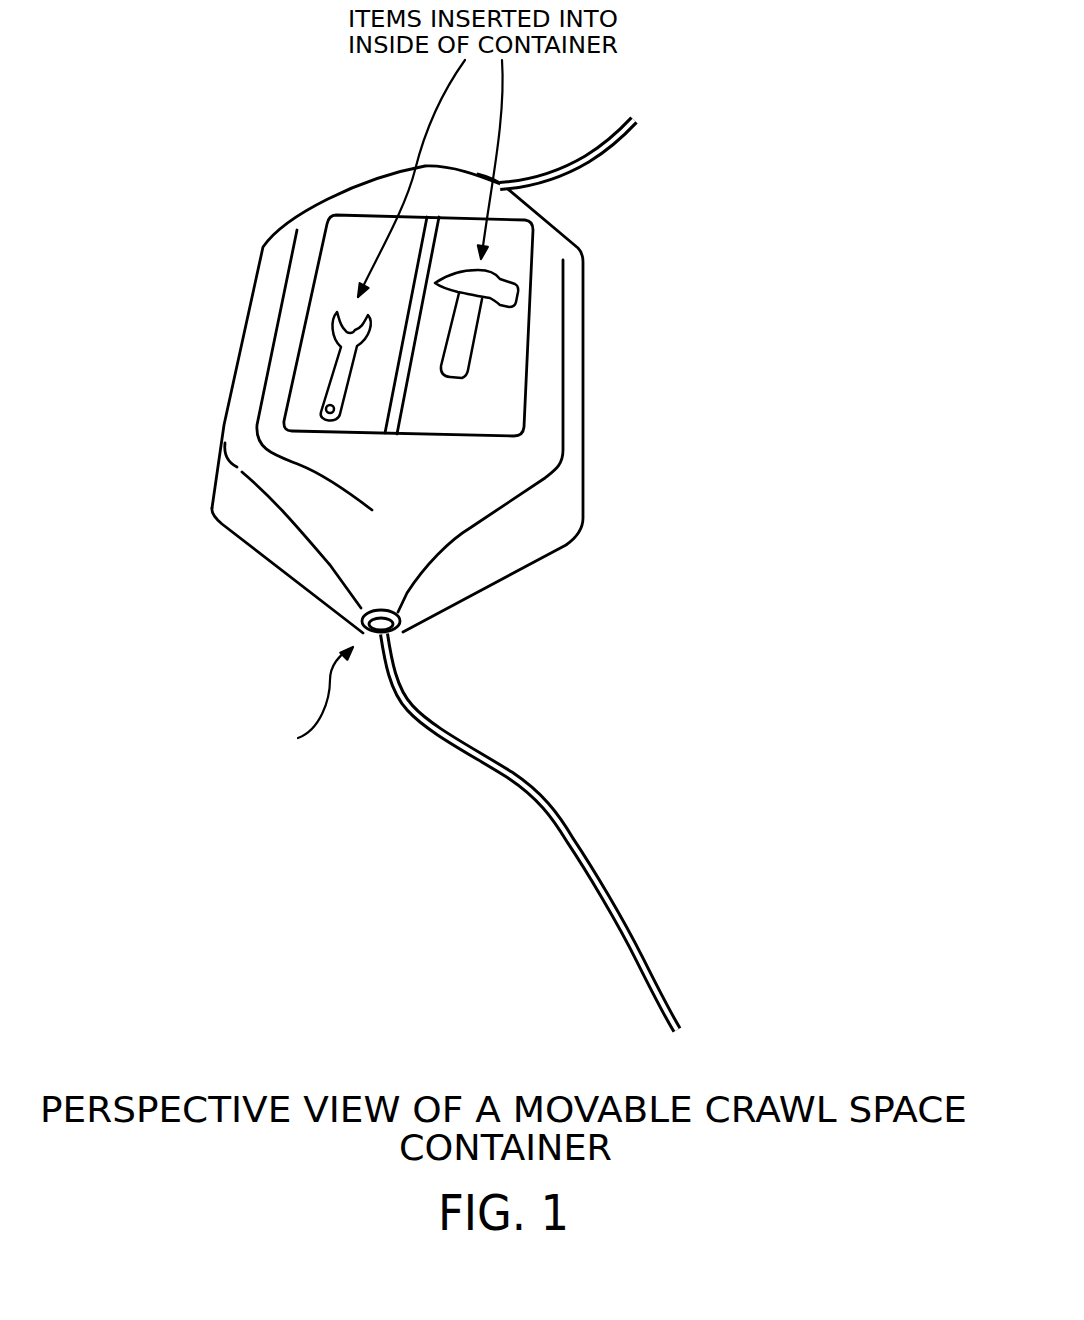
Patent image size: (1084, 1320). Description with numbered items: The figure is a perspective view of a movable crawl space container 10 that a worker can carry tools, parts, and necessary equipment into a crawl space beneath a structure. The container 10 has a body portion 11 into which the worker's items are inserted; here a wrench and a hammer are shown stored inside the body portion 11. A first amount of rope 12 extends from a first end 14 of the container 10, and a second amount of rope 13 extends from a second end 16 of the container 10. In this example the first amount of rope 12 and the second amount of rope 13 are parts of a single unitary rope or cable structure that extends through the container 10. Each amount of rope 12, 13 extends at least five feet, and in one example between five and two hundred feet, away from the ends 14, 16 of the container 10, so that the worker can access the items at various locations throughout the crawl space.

The movable crawl space container 10 is at (637, 412).
The body portion 11 is at (442, 501).
The first amount of rope 12 is at (618, 175).
The second amount of rope 13 is at (602, 793).
The first end 14 is at (524, 149).
The second end 16 is at (452, 646).